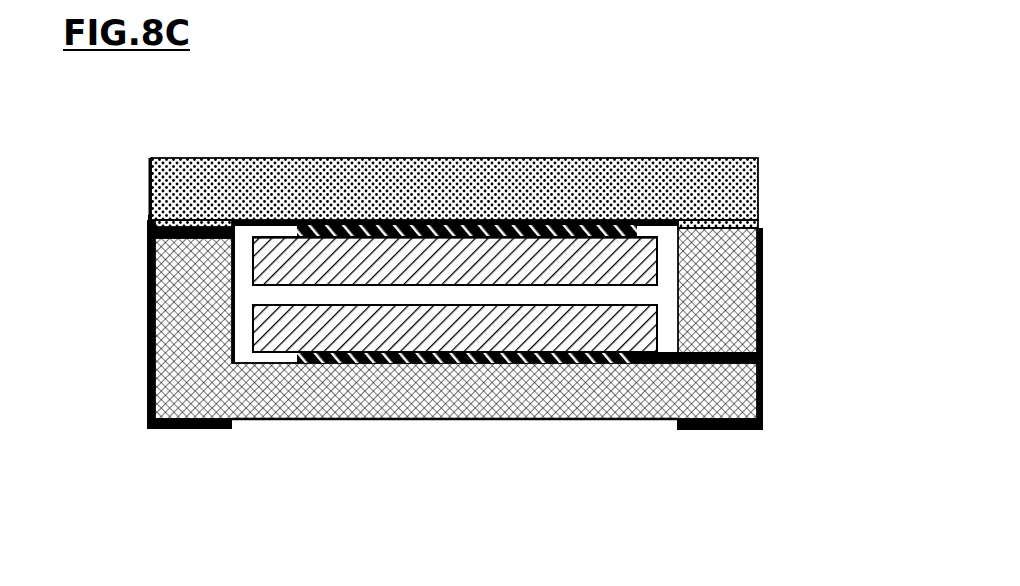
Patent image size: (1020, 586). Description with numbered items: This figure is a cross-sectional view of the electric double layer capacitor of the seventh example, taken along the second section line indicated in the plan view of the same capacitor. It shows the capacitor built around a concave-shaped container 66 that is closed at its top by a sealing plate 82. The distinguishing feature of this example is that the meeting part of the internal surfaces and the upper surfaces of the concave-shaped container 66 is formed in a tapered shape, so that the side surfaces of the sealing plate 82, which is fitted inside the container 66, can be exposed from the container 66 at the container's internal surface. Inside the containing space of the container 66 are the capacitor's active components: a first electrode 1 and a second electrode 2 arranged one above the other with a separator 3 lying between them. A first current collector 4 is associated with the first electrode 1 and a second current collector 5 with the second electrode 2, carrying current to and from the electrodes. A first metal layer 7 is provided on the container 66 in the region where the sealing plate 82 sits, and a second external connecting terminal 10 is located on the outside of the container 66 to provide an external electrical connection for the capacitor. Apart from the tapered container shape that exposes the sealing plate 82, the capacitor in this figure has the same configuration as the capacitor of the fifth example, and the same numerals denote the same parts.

The first electrode 1 is at (272, 275).
The second electrode 2 is at (270, 331).
The separator 3 is at (660, 295).
The first current collector 4 is at (322, 228).
The second current collector 5 is at (300, 422).
The first metal layer 7 is at (147, 223).
The second external connecting terminal 10 is at (760, 400).
The concave-shaped container 66 is at (203, 382).
The sealing plate 82 is at (475, 187).